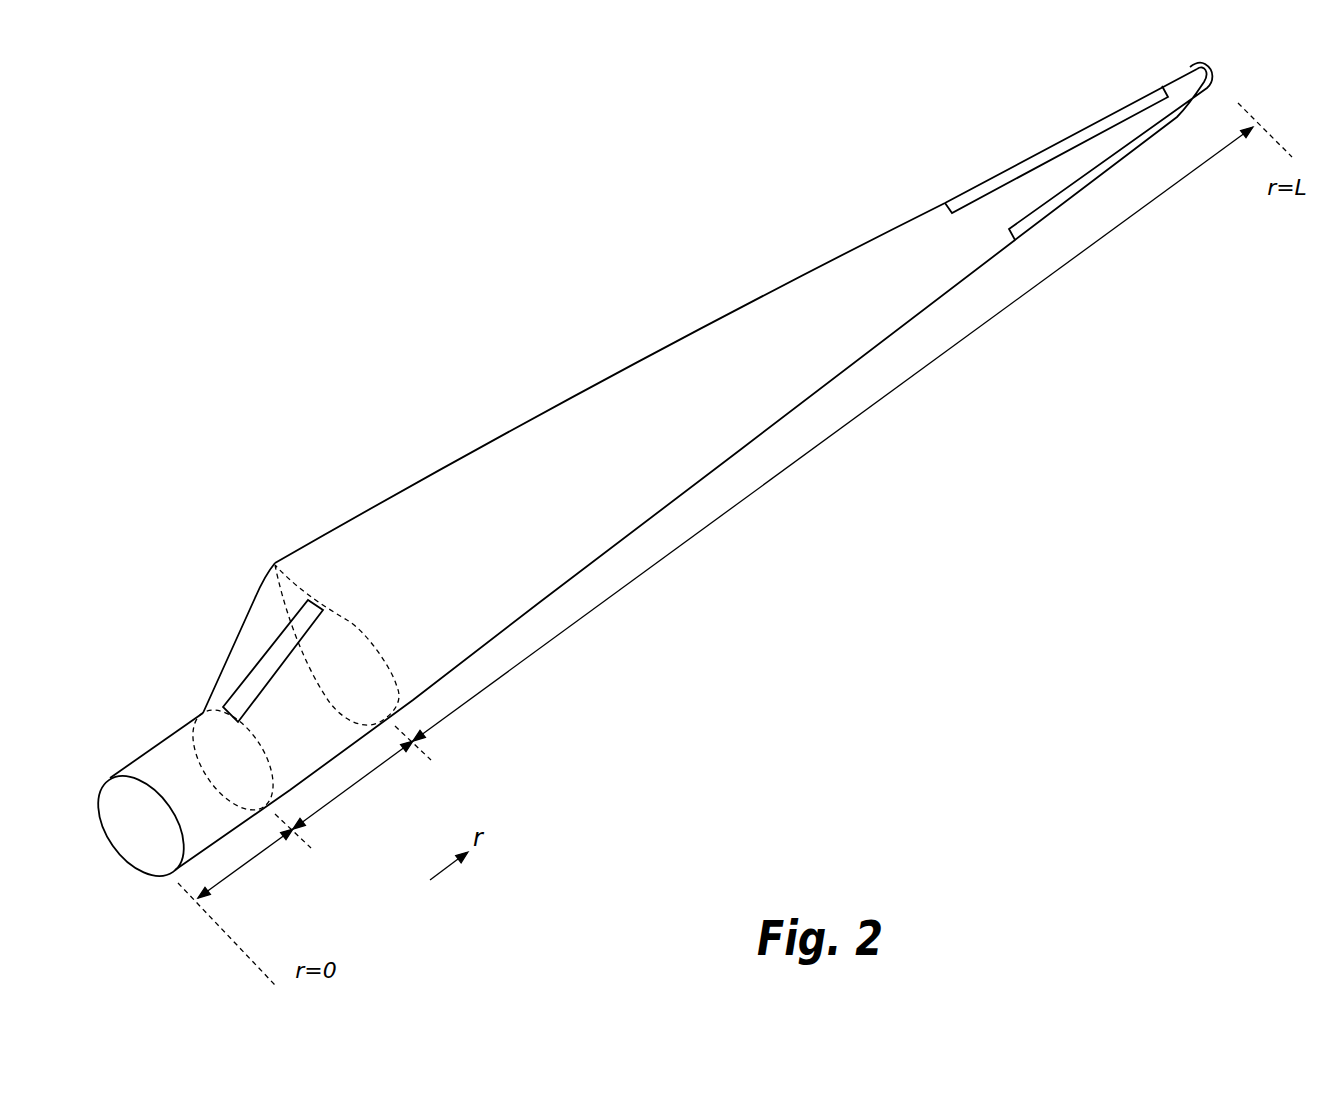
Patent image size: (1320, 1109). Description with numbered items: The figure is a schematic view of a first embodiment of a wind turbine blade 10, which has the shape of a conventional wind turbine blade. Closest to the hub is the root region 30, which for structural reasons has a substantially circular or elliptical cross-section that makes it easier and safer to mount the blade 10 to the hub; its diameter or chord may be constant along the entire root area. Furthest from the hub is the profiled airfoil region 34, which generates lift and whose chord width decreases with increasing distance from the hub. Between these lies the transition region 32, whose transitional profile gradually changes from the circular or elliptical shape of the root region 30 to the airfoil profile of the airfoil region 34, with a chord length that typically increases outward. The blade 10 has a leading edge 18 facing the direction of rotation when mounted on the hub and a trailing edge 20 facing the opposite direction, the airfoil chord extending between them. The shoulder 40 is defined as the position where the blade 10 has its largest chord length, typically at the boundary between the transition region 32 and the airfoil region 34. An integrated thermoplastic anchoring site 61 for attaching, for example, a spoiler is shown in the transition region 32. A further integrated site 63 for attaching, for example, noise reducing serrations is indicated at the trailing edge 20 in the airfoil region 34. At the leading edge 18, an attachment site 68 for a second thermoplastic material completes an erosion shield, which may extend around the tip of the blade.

The wind turbine blade 10 is at (675, 477).
The leading edge 18 is at (876, 352).
The trailing edge 20 is at (882, 233).
The root region 30 is at (250, 860).
The transition region 32 is at (360, 785).
The airfoil region 34 is at (752, 496).
The shoulder 40 is at (275, 563).
The integrated thermoplastic anchoring site 61 is at (266, 661).
The integrated site 63 is at (1010, 173).
The attachment site 68 is at (1173, 120).